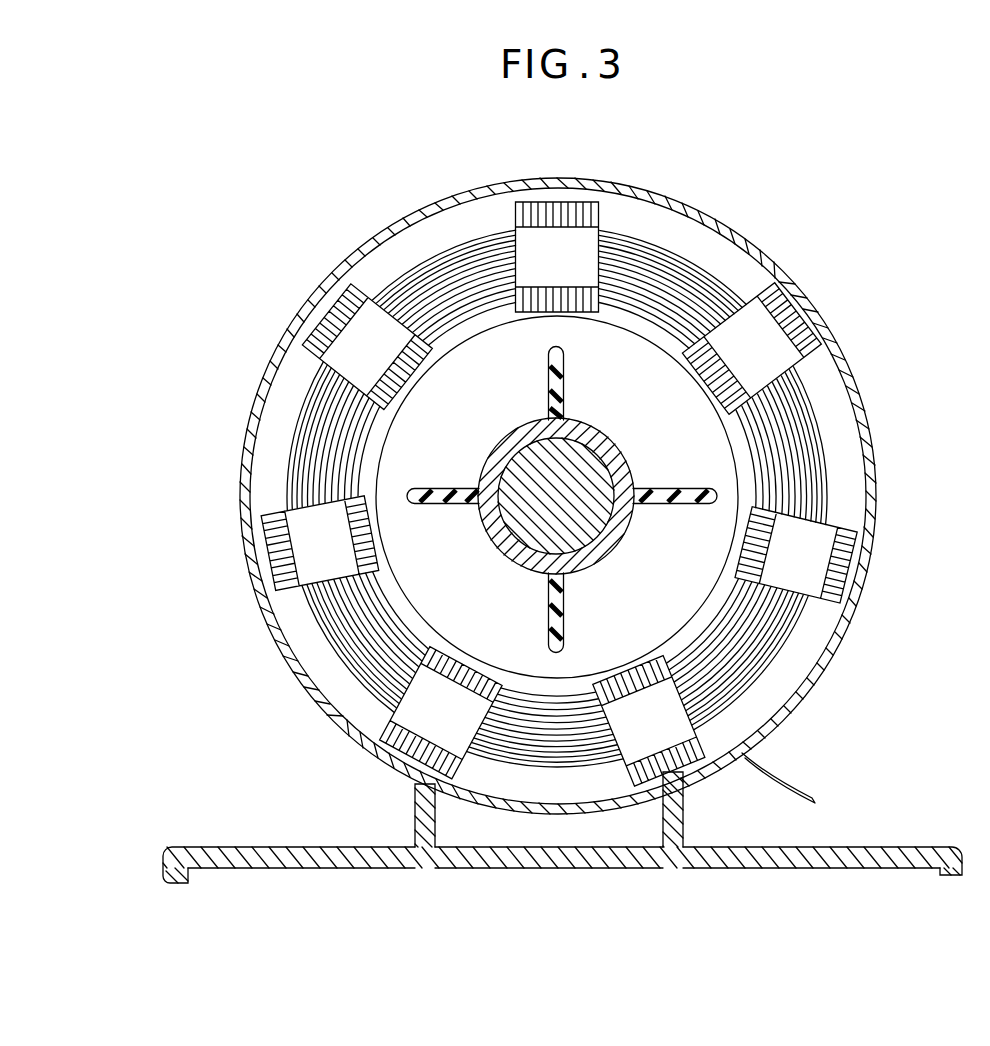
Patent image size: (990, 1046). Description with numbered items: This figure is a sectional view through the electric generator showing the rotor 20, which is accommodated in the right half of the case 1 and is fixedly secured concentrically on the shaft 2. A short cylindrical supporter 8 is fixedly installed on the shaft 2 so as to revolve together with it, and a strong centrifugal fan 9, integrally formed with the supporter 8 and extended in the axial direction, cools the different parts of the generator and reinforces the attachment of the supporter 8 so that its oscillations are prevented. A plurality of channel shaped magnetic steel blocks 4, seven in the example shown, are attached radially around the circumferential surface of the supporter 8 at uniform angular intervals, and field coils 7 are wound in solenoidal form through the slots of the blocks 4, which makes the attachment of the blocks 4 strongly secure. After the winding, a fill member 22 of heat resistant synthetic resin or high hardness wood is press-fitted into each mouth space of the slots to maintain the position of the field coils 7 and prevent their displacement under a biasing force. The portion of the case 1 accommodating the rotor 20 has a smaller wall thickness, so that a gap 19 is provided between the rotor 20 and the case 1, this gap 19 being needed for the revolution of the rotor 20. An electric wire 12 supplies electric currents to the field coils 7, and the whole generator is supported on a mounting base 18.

The case 1 is at (400, 228).
The shaft 2 is at (574, 477).
The channel shaped magnetic steel blocks 4 is at (578, 208).
The field coils 7 is at (686, 275).
The supporter 8 is at (723, 457).
The centrifugal fan 9 is at (552, 394).
The electric wire 12 is at (763, 768).
The mounting base 18 is at (744, 852).
The gap 19 is at (549, 189).
The rotor 20 is at (272, 333).
The fill member 22 is at (756, 340).